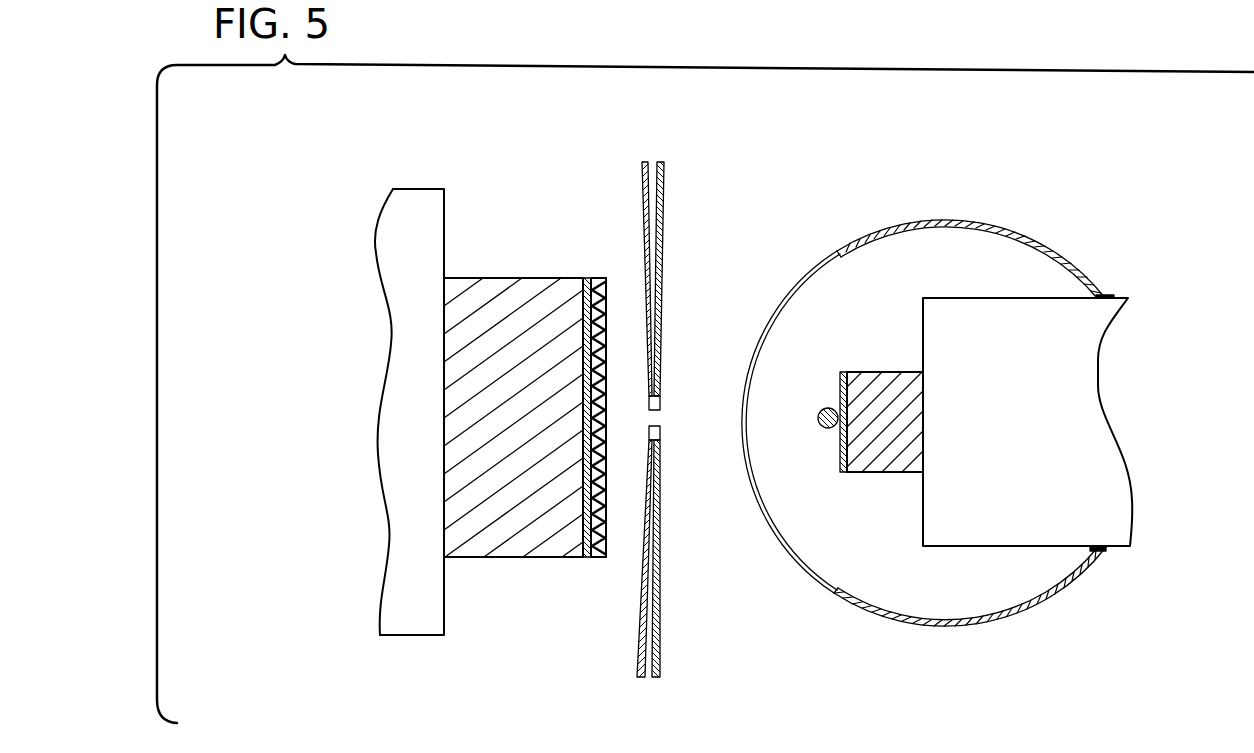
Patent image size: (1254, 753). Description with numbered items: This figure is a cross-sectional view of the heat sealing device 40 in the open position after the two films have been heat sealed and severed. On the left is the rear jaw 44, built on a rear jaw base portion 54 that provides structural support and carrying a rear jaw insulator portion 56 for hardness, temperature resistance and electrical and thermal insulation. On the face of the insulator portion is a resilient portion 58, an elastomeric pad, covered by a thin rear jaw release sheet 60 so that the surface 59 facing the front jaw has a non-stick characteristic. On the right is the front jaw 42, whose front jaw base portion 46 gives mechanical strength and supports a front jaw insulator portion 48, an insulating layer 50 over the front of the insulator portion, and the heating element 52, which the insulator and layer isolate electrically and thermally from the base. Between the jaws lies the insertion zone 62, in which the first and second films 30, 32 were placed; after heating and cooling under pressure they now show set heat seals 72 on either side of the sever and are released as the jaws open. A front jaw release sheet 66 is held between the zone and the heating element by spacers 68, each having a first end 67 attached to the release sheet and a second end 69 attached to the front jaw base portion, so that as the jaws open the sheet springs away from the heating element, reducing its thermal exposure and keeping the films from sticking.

The first film 30 is at (665, 190).
The second film 32 is at (641, 185).
The heat sealing device 40 is at (944, 390).
The front jaw 42 is at (1050, 400).
The rear jaw 44 is at (375, 373).
The front jaw base portion 46 is at (1070, 400).
The front jaw insulator portion 48 is at (870, 372).
The insulating layer 50 is at (842, 372).
The heating element 52 is at (819, 413).
The rear jaw base portion 54 is at (389, 257).
The rear jaw insulator portion 56 is at (520, 278).
The resilient portion 58 is at (587, 278).
The surface 59 is at (607, 302).
The rear jaw release sheet 60 is at (599, 278).
The zone 62 is at (700, 340).
The front jaw release sheet 66 is at (752, 507).
The first end 67 is at (843, 257).
The spacers 68 is at (930, 225).
The second end 69 is at (1107, 295).
The heat seal 72 is at (661, 428).